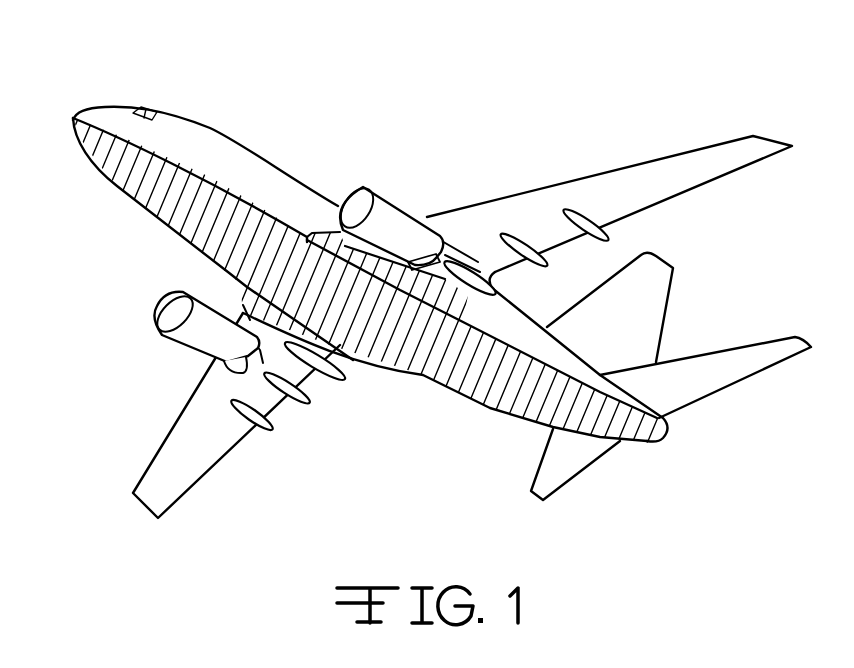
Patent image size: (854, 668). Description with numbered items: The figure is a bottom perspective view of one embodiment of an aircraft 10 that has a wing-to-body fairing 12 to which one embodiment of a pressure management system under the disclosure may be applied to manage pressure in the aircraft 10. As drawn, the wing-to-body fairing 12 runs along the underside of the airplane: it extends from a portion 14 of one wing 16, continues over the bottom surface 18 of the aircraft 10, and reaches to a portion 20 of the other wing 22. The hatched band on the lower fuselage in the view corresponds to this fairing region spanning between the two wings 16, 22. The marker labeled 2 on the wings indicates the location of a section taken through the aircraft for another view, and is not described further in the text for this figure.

The aircraft 10 is at (695, 77).
The wing-to-body fairing 12 is at (148, 190).
The portion of one wing 14 is at (397, 203).
The wing 16 is at (612, 172).
The bottom surface 18 is at (420, 350).
The portion of the other wing 20 is at (243, 310).
The other wing 22 is at (197, 480).
The section line of FIG. 2 is at (228, 435).